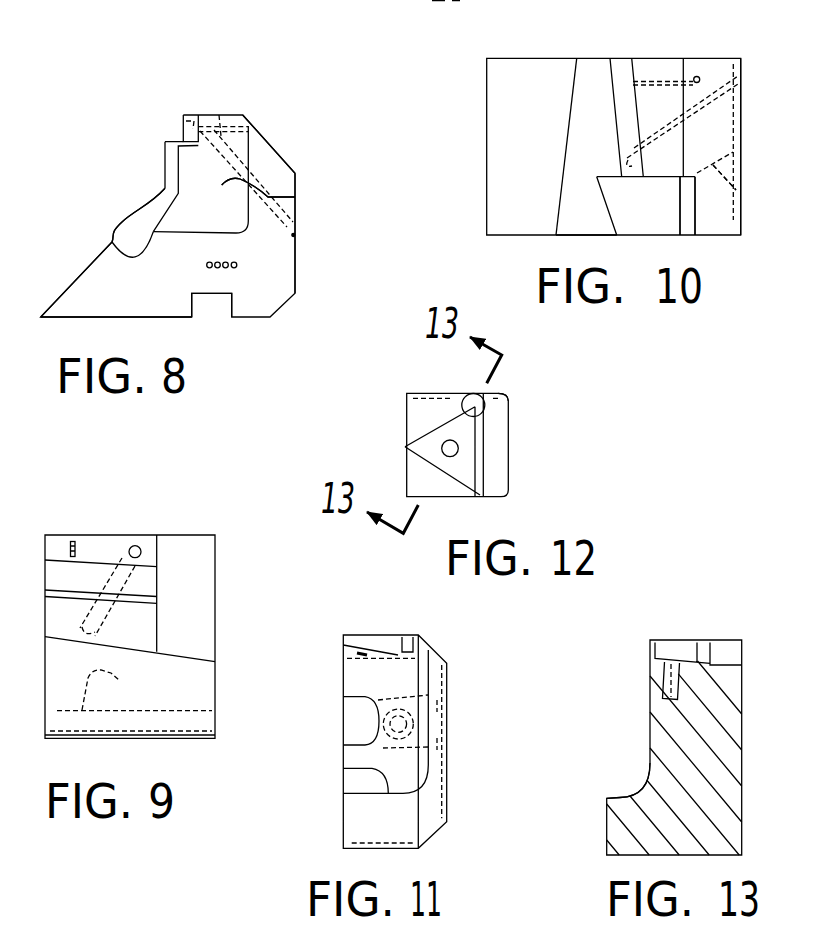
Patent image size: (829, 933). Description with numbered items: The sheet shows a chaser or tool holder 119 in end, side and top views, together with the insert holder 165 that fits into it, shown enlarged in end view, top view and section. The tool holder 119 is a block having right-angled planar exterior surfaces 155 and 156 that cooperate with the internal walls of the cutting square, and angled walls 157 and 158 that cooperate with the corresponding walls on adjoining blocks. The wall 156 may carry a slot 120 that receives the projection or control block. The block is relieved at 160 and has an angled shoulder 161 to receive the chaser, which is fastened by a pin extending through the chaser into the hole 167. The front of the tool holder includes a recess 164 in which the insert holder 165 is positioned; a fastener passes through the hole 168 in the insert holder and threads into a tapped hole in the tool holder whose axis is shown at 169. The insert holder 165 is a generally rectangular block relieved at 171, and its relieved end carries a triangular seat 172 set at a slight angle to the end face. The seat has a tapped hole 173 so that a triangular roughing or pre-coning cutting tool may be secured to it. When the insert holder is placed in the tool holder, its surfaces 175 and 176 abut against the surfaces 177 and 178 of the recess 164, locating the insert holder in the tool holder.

In FIG. 8, the tool holder 119 is at (318, 210).
In FIG. 10, the tool holder 119 is at (748, 110).
In FIG. 8, the slot 120 is at (226, 304).
In FIG. 9, the slot 120 is at (121, 689).
In FIG. 8, the planar exterior surface 155 is at (297, 253).
In FIG. 10, the planar exterior surface 155 is at (740, 133).
In FIG. 8, the planar exterior surface 156 is at (172, 322).
In FIG. 9, the planar exterior surface 156 is at (175, 739).
In FIG. 8, the angled wall 157 is at (266, 140).
In FIG. 8, the angled wall 158 is at (85, 247).
In FIG. 8, the relief 160 is at (153, 208).
In FIG. 10, the relief 160 is at (583, 107).
In FIG. 8, the angled shoulder 161 is at (182, 121).
In FIG. 10, the angled shoulder 161 is at (623, 66).
In FIG. 9, the angled shoulder 161 is at (100, 561).
In FIG. 8, the recess 164 is at (297, 197).
In FIG. 10, the recess 164 is at (652, 223).
In FIG. 9, the recess 164 is at (193, 607).
In FIG. 12, the insert holder 165 is at (513, 447).
In FIG. 11, the insert holder 165 is at (452, 761).
In FIG. 13, the insert holder 165 is at (742, 745).
In FIG. 8, the hole 167 is at (220, 115).
In FIG. 10, the hole 167 is at (706, 100).
In FIG. 9, the hole 167 is at (140, 547).
In FIG. 11, the hole 168 is at (428, 697).
In FIG. 10, the axis of tapped hole 169 is at (741, 194).
In FIG. 11, the relief 171 is at (343, 769).
In FIG. 13, the relief 171 is at (650, 742).
In FIG. 12, the triangular seat 172 is at (462, 468).
In FIG. 11, the triangular seat 172 is at (380, 652).
In FIG. 13, the triangular seat 172 is at (698, 641).
In FIG. 12, the tapped hole 173 is at (445, 441).
In FIG. 13, the tapped hole 173 is at (664, 680).
In FIG. 12, the surface 175 is at (440, 390).
In FIG. 12, the surface 176 is at (508, 417).
In FIG. 10, the surface of recess 177 is at (664, 178).
In FIG. 10, the surface of recess 178 is at (697, 198).